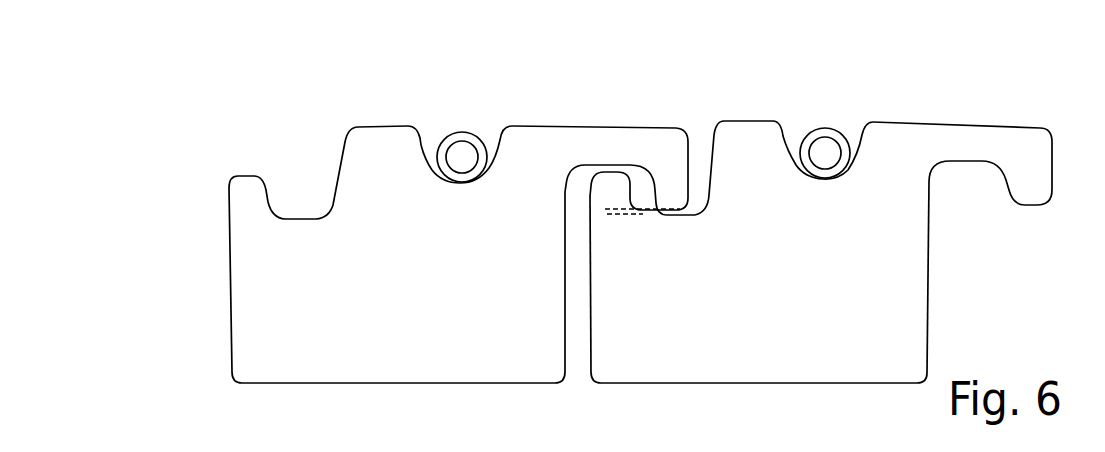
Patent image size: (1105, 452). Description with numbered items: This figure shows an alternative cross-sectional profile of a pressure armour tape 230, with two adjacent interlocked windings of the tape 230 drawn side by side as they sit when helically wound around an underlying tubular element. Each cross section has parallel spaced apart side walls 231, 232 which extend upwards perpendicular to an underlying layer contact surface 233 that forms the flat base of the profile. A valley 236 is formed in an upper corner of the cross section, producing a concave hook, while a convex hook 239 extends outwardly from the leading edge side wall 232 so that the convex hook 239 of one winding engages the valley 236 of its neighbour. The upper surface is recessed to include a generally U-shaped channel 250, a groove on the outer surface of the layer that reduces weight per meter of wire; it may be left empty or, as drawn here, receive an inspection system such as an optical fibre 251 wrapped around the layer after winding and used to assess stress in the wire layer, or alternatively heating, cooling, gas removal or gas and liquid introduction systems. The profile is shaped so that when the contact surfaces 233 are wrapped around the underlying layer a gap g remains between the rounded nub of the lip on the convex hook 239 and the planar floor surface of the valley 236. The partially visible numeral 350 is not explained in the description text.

The tape 230 is at (422, 289).
The side wall 231 is at (630, 312).
The leading edge side wall 232 is at (983, 277).
The underlying layer contact surface 233 is at (770, 413).
The valley 236 is at (745, 190).
The convex hook 239 is at (605, 108).
The U-shaped channel 250 is at (490, 132).
The optical fibre 251 is at (455, 132).
The gap g is at (622, 213).
The substrate 350 is at (767, 447).